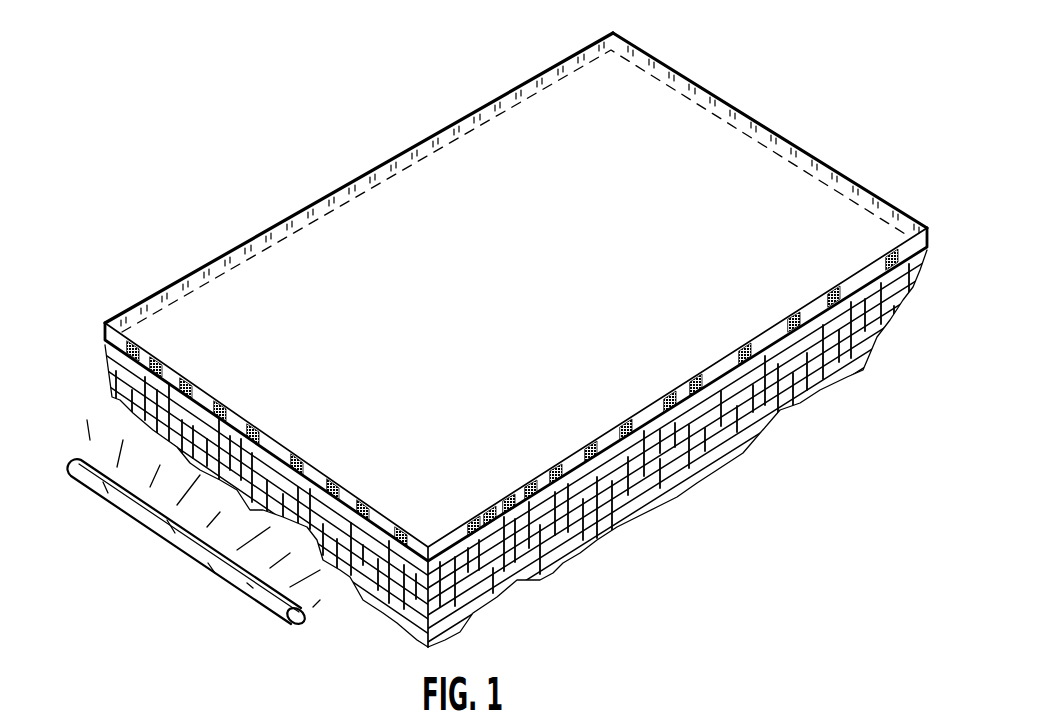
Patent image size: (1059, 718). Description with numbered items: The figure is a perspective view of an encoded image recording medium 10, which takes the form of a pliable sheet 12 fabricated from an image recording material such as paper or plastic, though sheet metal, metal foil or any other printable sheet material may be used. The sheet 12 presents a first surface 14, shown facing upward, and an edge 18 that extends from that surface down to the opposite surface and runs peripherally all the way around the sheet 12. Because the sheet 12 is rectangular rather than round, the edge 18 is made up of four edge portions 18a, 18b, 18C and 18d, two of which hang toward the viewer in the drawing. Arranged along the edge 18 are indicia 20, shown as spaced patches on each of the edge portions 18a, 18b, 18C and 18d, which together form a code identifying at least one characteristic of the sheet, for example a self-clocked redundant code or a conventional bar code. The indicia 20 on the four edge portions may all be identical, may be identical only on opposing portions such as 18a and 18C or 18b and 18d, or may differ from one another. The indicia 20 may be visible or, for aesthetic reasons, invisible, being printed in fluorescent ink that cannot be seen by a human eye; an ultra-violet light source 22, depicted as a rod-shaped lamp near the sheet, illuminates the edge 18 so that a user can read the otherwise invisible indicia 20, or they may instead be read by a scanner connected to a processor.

The encoded image recording medium 10 is at (291, 162).
The pliable sheet 12 is at (548, 97).
The first surface 14 is at (223, 240).
The edge 18 is at (108, 335).
The edge portion 18a is at (382, 524).
The edge portion 18b is at (473, 532).
The edge portion 18C is at (763, 122).
The edge portion 18d is at (398, 155).
The indicia 20 is at (222, 405).
The ultra-violet light source 22 is at (210, 567).